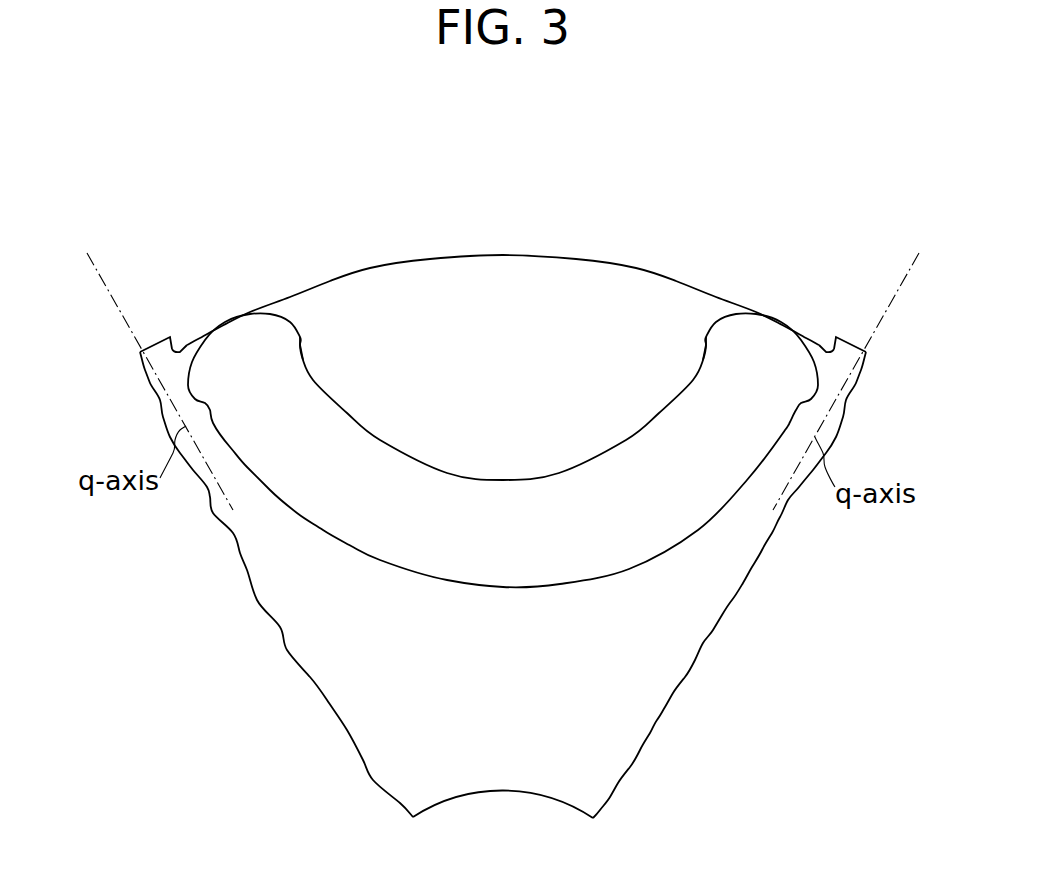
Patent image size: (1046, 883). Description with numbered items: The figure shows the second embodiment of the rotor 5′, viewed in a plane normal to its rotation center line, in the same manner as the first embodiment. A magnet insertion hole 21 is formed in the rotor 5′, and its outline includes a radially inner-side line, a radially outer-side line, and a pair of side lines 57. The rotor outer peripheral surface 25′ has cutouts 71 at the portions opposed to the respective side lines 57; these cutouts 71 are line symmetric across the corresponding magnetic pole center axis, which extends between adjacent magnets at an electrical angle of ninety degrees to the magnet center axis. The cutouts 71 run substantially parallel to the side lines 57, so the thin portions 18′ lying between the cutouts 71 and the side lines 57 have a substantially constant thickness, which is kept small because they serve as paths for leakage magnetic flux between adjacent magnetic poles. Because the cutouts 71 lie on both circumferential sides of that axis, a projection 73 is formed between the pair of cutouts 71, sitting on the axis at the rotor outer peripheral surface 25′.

The rotor 5′ is at (110, 189).
The rotor outer peripheral surface 25′ is at (548, 256).
The projection 73 is at (150, 348).
The cutouts 71 is at (183, 343).
The magnet insertion hole 21 is at (347, 410).
The side lines 57 is at (223, 330).
The thin portions 18′ is at (227, 322).